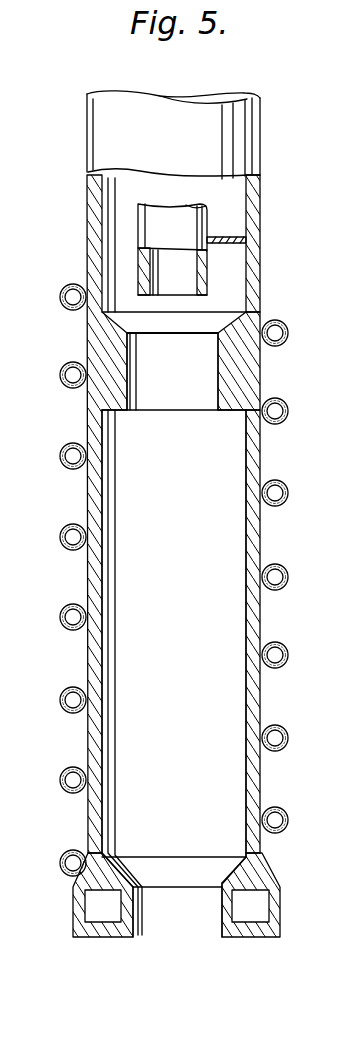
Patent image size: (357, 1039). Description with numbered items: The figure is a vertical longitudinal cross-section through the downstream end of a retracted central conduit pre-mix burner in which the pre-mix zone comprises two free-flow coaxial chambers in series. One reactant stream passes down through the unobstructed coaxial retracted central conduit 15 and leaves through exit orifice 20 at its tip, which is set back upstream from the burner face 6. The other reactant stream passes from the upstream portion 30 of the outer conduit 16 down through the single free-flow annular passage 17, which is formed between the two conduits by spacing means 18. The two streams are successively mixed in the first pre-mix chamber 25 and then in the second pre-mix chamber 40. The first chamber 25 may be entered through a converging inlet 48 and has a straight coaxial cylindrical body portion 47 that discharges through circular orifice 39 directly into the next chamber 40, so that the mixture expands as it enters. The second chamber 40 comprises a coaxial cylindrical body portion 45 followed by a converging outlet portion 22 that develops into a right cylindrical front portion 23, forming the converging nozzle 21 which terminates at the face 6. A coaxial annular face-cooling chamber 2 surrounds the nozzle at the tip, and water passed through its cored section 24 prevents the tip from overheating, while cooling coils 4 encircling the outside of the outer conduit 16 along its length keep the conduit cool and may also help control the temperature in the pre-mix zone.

The face-cooling chamber 2 is at (281, 903).
The cooling coils 4 is at (278, 727).
The face 6 is at (197, 936).
The central conduit 15 is at (207, 228).
The outer conduit 16 is at (258, 256).
The annular passage 17 is at (232, 283).
The spacing means 18 is at (240, 240).
The exit orifice 20 is at (200, 296).
The converging nozzle 21 is at (203, 865).
The frusto-conical rear portion 22 is at (147, 857).
The right cylindrical front portion 23 is at (155, 918).
The cored section 24 is at (252, 913).
The pre-mix chamber 25 is at (190, 398).
The upstream portion of outer conduit 30 is at (240, 140).
The circular orifice 39 is at (212, 413).
The pre-mix chamber 40 is at (184, 618).
The cylindrical body portion 45 is at (248, 540).
The straight cylindrical body portion 47 is at (219, 372).
The converging inlet 48 is at (157, 334).